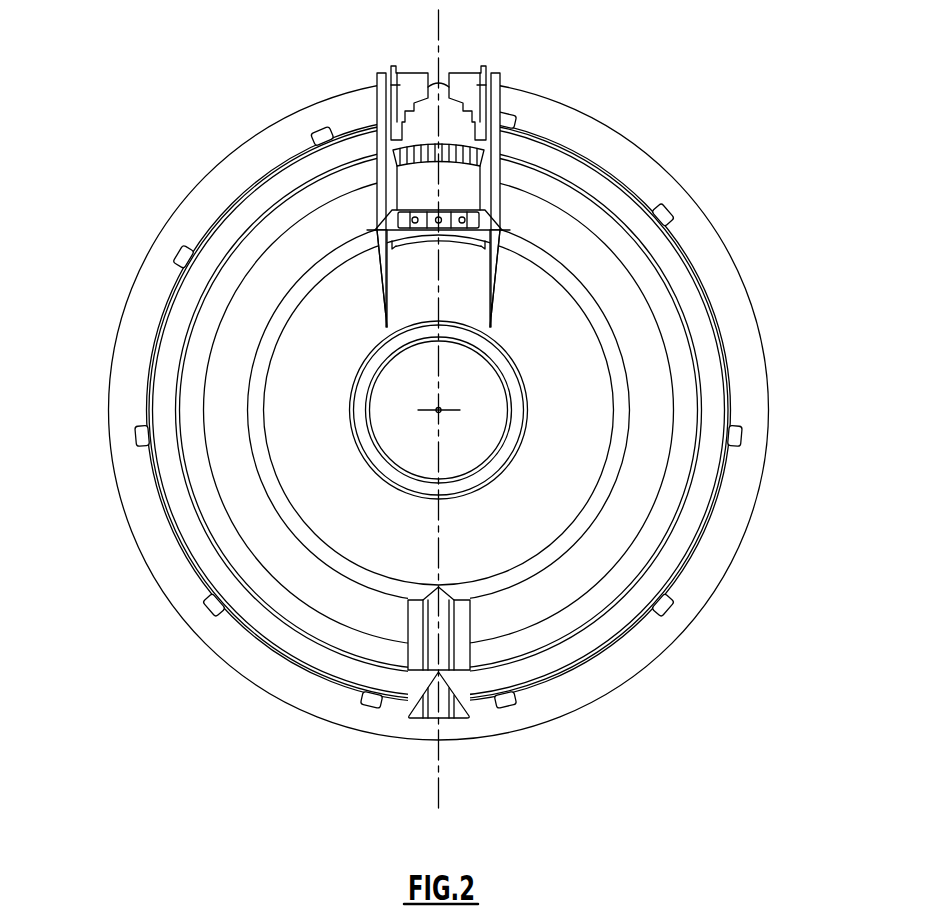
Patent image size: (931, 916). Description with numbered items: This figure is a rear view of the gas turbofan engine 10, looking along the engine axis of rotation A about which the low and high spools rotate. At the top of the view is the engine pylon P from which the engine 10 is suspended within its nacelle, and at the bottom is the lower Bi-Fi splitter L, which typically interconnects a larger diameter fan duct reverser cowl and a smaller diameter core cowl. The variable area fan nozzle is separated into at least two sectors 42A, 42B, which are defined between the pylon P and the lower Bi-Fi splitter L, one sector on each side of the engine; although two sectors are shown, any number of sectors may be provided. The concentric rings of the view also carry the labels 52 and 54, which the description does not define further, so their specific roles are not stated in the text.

The gas turbofan engine 10 is at (685, 123).
The outer housing 52 is at (673, 214).
The retaining ring 54 is at (713, 404).
The first sector of the VAFN 42A is at (110, 297).
The second sector of the VAFN 42B is at (777, 311).
The engine pylon P is at (499, 92).
The engine axis of rotation A is at (439, 411).
The lower Bi-Fi splitter L is at (452, 657).